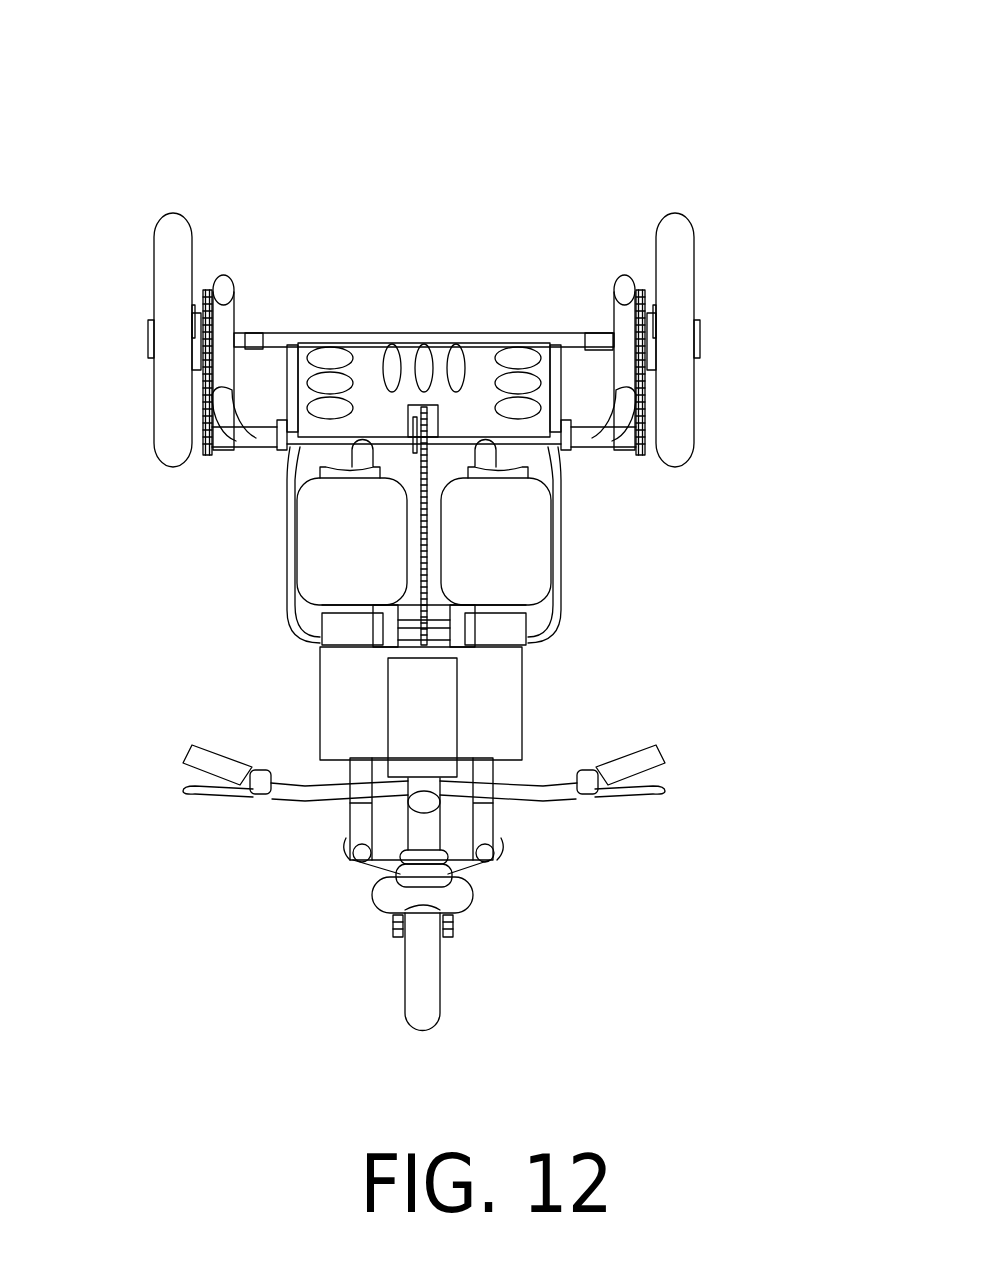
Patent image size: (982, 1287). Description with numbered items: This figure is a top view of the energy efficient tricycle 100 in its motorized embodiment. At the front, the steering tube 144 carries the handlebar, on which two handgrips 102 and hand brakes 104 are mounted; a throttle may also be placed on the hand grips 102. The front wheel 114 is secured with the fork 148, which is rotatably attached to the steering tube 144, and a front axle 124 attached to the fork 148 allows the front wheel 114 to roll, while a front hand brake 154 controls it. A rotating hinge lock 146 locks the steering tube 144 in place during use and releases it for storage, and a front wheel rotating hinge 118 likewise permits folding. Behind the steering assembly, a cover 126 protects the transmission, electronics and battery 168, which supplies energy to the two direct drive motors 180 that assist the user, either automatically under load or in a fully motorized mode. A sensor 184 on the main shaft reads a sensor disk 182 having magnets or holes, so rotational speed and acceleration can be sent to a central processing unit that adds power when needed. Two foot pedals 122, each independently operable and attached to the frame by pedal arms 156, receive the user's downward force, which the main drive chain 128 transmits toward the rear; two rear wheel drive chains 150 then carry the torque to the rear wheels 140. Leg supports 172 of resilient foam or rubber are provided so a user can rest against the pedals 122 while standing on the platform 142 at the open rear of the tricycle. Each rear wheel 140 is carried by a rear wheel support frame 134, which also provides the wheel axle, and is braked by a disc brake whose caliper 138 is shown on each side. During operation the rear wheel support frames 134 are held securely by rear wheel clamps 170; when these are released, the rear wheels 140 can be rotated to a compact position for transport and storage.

The energy efficient tricycle 100 is at (164, 106).
The handgrips 102 is at (203, 760).
The hand brakes 104 is at (213, 792).
The front wheel 114 is at (428, 1007).
The front wheel rotating hinge 118 is at (497, 852).
The foot pedals 122 is at (307, 530).
The front axle 124 is at (452, 933).
The cover 126 is at (503, 730).
The main drive chain 128 is at (427, 485).
The rear wheel support frame 134 is at (223, 292).
The caliper 138 is at (190, 317).
The rear wheels 140 is at (163, 255).
The platform 142 is at (307, 345).
The steering tube 144 is at (413, 823).
The rotating hinge lock 146 is at (347, 855).
The fork 148 is at (470, 900).
The rear wheel drive chains 150 is at (207, 417).
The front hand brake 154 is at (388, 915).
The pedal arms 156 is at (383, 630).
The battery 168 is at (407, 730).
The rear wheel clamps 170 is at (257, 338).
The leg supports 172 is at (325, 471).
The direct drive motors 180 is at (193, 353).
The sensor disk 182 is at (416, 418).
The sensor 184 is at (412, 412).